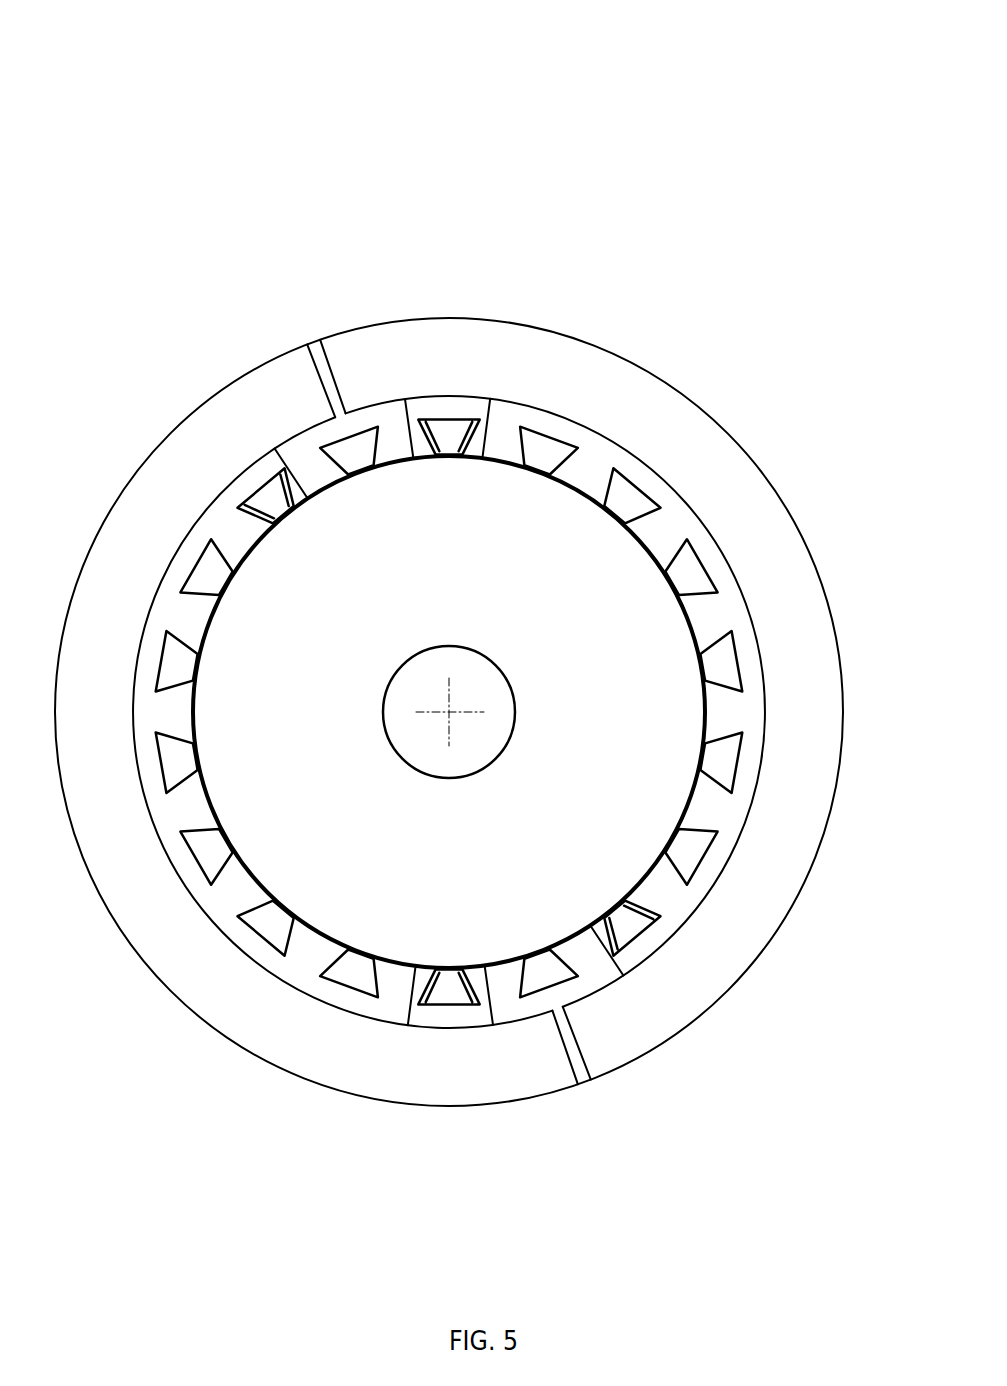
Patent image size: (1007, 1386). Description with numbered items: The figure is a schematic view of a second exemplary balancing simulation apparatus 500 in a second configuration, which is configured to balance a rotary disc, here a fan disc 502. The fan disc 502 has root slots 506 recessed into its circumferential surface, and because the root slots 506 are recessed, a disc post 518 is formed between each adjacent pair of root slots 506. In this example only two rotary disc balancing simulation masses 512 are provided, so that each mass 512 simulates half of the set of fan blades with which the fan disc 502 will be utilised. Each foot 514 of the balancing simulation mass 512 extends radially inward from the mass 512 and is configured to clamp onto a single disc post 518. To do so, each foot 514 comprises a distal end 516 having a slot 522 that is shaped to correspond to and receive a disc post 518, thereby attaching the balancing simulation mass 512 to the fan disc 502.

The balancing simulation apparatus 500 is at (729, 211).
The fan disc 502 is at (497, 862).
The root slots 506 is at (490, 399).
The rotary disc balancing simulation mass 512 is at (138, 543).
The foot 514 is at (227, 497).
The distal end 516 is at (248, 527).
The disc post 518 is at (307, 387).
The slot 522 is at (335, 412).